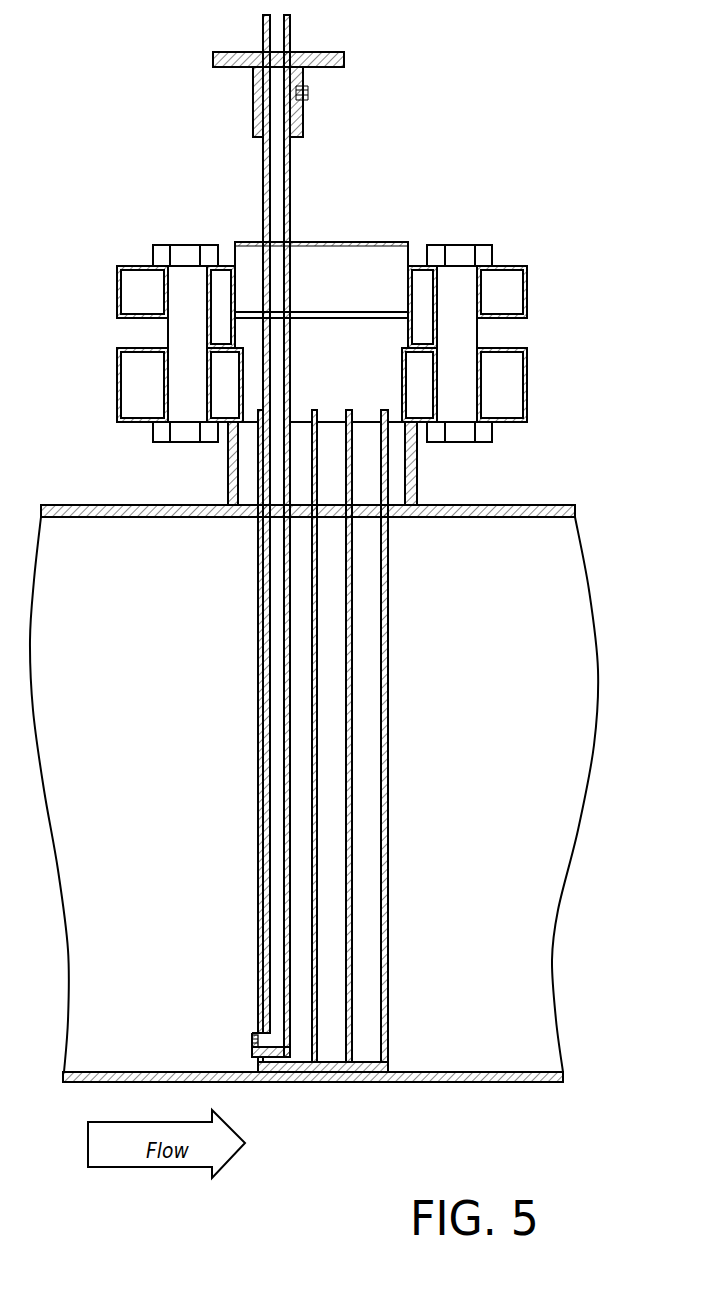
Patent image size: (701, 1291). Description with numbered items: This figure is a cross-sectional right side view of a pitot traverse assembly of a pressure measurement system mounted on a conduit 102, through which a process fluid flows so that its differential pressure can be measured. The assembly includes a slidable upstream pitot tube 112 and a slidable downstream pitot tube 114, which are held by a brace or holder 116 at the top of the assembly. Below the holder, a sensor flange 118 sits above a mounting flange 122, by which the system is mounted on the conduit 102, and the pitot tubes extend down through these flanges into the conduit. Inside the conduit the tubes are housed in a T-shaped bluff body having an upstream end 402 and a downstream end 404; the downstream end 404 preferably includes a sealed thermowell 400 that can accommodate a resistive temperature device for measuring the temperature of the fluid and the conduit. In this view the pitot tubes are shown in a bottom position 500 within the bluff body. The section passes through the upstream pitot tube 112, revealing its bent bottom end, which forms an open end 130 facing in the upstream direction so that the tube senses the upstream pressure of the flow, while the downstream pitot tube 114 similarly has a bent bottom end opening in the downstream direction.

The conduit 102 is at (535, 504).
The slidable upstream pitot tube 112 is at (278, 207).
The slidable downstream pitot tube 114 is at (262, 200).
The brace or holder 116 is at (344, 60).
The sensor flange 118 is at (528, 290).
The mounting flange 122 is at (528, 385).
The open end 130 is at (250, 1046).
The sealed thermowell 400 is at (362, 832).
The upstream end 402 is at (250, 815).
The downstream end 404 is at (402, 720).
The bottom position 500 is at (222, 1019).